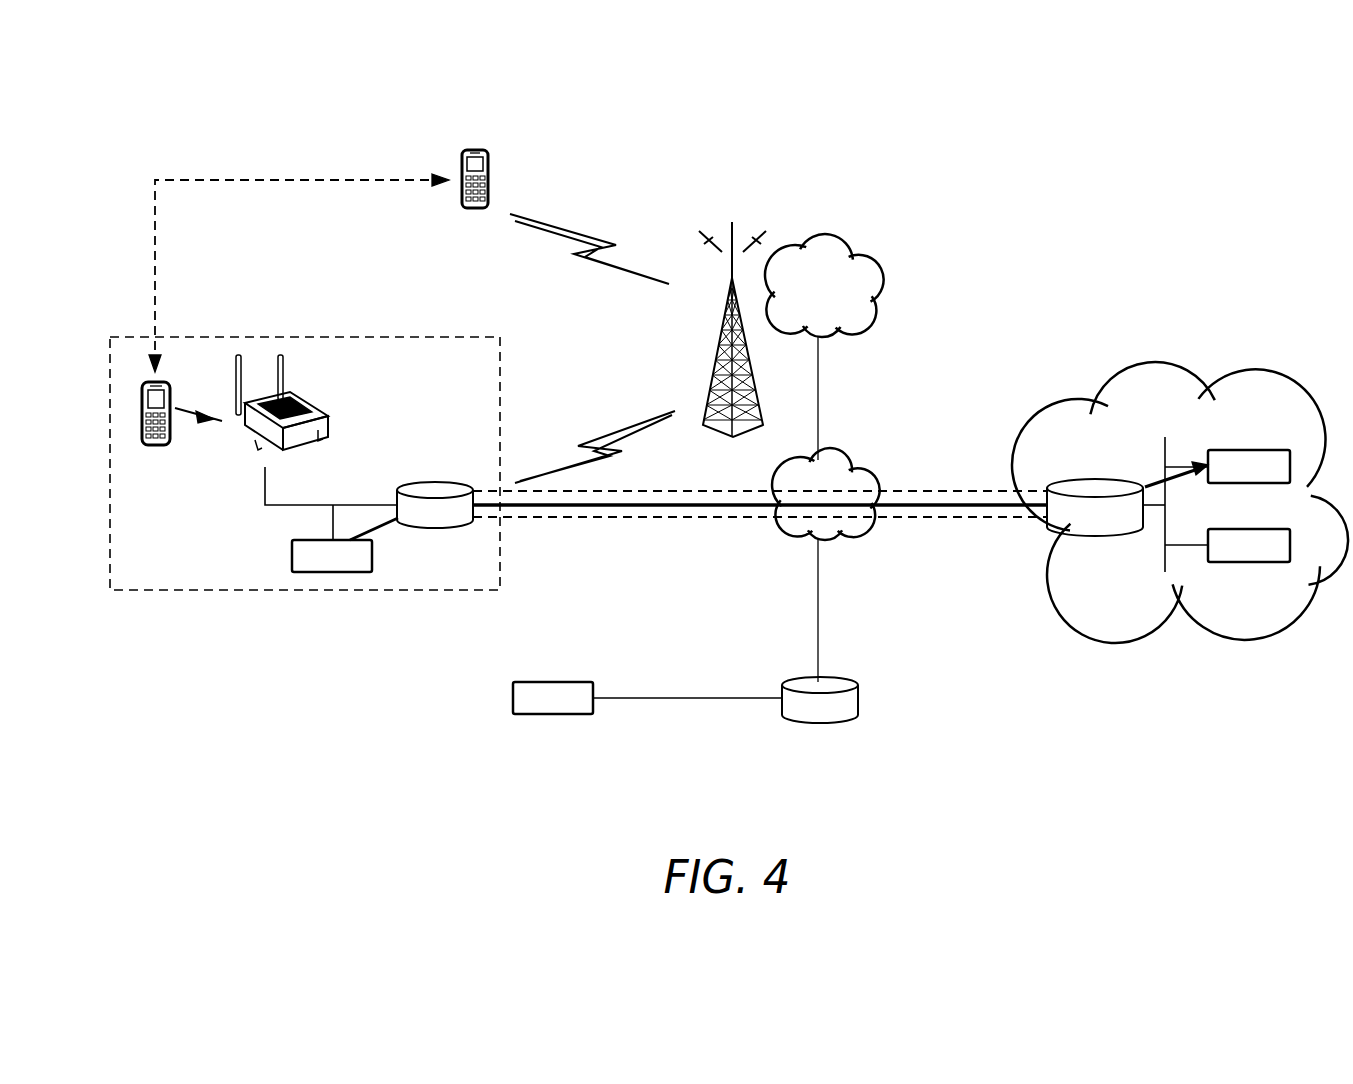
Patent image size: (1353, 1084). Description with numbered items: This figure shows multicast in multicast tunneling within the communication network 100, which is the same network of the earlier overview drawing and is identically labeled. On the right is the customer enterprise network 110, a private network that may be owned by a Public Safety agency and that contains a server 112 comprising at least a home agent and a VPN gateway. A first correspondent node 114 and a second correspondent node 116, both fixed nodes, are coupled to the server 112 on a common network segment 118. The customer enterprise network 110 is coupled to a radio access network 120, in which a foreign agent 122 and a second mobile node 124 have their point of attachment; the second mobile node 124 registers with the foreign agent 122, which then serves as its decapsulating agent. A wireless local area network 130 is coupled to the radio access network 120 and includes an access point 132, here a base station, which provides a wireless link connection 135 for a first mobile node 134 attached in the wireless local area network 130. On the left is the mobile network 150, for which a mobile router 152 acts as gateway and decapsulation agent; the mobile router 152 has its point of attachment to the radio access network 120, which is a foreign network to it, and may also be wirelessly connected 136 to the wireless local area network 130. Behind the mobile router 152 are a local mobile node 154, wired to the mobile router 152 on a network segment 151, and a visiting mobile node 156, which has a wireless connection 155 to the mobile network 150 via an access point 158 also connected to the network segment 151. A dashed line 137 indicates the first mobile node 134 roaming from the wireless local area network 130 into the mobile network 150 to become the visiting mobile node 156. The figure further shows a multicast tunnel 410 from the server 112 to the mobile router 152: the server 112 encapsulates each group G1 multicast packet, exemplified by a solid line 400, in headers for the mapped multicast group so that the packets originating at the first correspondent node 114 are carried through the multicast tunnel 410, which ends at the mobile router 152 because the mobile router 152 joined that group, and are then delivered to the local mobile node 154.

The communication network 100 is at (711, 825).
The customer enterprise network 110 is at (1153, 363).
The server 112 is at (1097, 537).
The first correspondent node 114 is at (1222, 450).
The second correspondent node 116 is at (1252, 562).
The common network segment 118 is at (1164, 442).
The radio access network 120 is at (778, 486).
The foreign agent 122 is at (803, 678).
The second mobile node 124 is at (527, 682).
The wireless local area network 130 is at (812, 235).
The access point AP1 132 is at (713, 345).
The first mobile node 134 is at (475, 150).
The wireless link connection 135 is at (610, 243).
The wireless connection 136 is at (599, 440).
The roaming path 137 is at (304, 180).
The mobile network 150 is at (122, 337).
The network segment 151 is at (265, 487).
The mobile router 152 is at (432, 482).
The local mobile node 154 is at (292, 558).
The wireless connection 155 is at (206, 408).
The visiting mobile node 156 is at (137, 410).
The access point 158 is at (327, 421).
The IP multicast packets 400 is at (1194, 482).
The multicast tunnel 410 is at (648, 519).